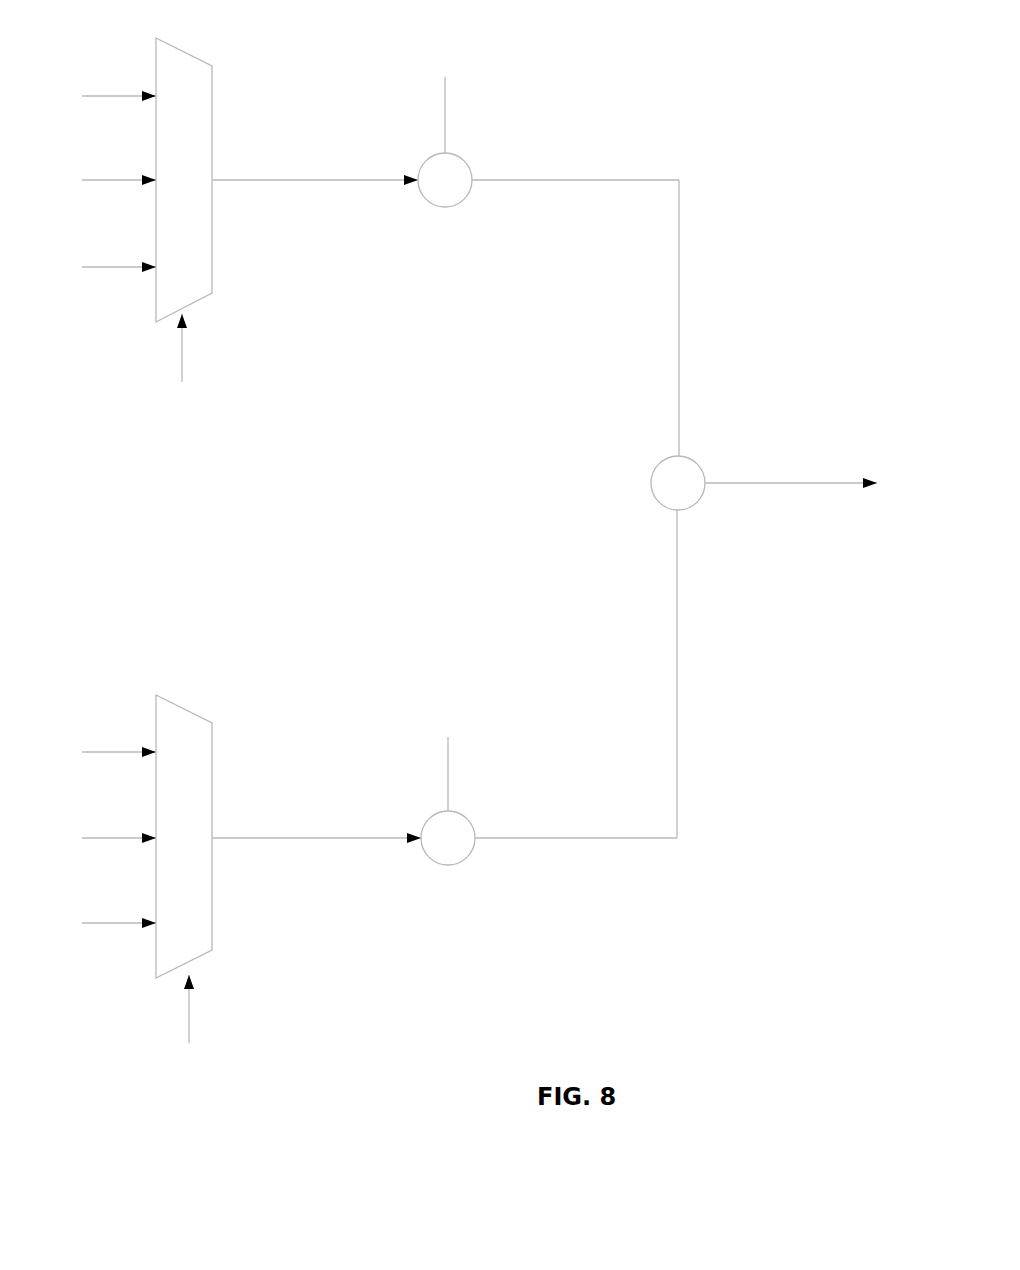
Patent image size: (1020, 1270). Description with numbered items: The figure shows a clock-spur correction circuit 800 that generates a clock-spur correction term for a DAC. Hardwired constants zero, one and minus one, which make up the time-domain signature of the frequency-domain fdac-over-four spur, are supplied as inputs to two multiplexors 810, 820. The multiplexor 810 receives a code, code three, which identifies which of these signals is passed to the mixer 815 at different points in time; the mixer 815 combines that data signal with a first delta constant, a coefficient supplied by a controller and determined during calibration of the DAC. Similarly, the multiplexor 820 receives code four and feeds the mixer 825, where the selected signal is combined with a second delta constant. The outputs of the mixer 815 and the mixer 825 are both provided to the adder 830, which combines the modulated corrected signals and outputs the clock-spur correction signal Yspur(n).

The clock-spur correction circuit 800 is at (462, 559).
The multiplexor 810 is at (232, 227).
The mixer 815 is at (548, 124).
The multiplexor 820 is at (234, 887).
The mixer 825 is at (549, 780).
The adder 830 is at (735, 509).